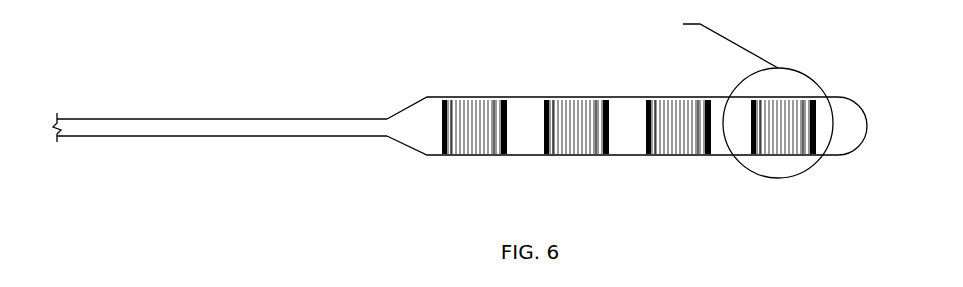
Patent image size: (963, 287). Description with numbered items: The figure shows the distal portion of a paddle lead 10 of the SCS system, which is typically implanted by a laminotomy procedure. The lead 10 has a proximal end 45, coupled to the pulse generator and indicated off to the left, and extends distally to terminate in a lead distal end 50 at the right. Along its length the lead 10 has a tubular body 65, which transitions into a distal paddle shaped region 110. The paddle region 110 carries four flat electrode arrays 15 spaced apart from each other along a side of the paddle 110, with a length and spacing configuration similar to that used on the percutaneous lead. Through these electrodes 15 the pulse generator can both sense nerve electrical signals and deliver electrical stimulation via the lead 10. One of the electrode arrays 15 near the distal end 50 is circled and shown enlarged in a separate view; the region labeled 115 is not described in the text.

The lead 10 is at (479, 116).
The flat electrode array 15 is at (474, 159).
The proximal end 45 is at (137, 113).
The lead distal end 50 is at (869, 124).
The tubular body 65 is at (290, 118).
The paddle shaped region 110 is at (646, 109).
The electrode carrier body 115 is at (630, 97).